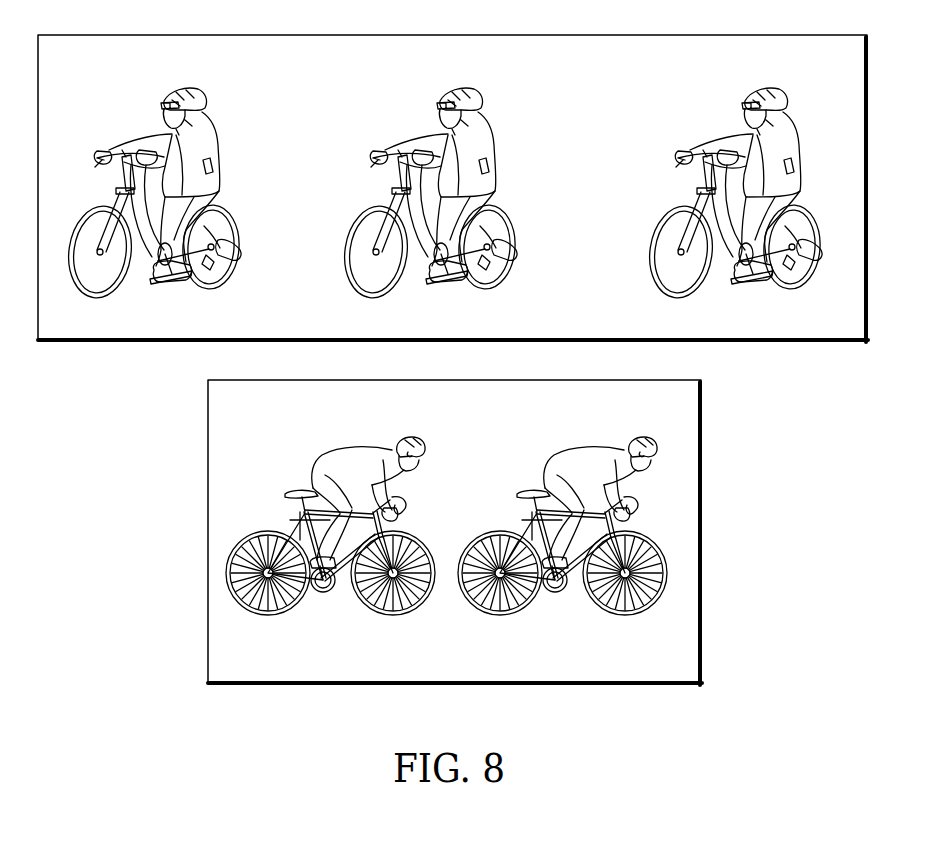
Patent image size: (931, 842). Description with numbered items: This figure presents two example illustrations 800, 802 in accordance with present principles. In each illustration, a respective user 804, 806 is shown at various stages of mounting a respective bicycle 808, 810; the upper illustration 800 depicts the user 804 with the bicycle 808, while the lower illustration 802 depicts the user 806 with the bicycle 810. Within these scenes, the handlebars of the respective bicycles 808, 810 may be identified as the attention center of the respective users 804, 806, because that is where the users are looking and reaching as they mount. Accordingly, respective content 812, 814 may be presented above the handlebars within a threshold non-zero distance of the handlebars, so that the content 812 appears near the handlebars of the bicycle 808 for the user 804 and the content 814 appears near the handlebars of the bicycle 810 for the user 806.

The illustration 800 is at (803, 343).
The illustration 802 is at (663, 686).
The user 804 is at (158, 92).
The user 806 is at (580, 449).
The bicycle 808 is at (83, 243).
The bicycle 810 is at (623, 610).
The content 812 is at (162, 103).
The content 814 is at (420, 466).